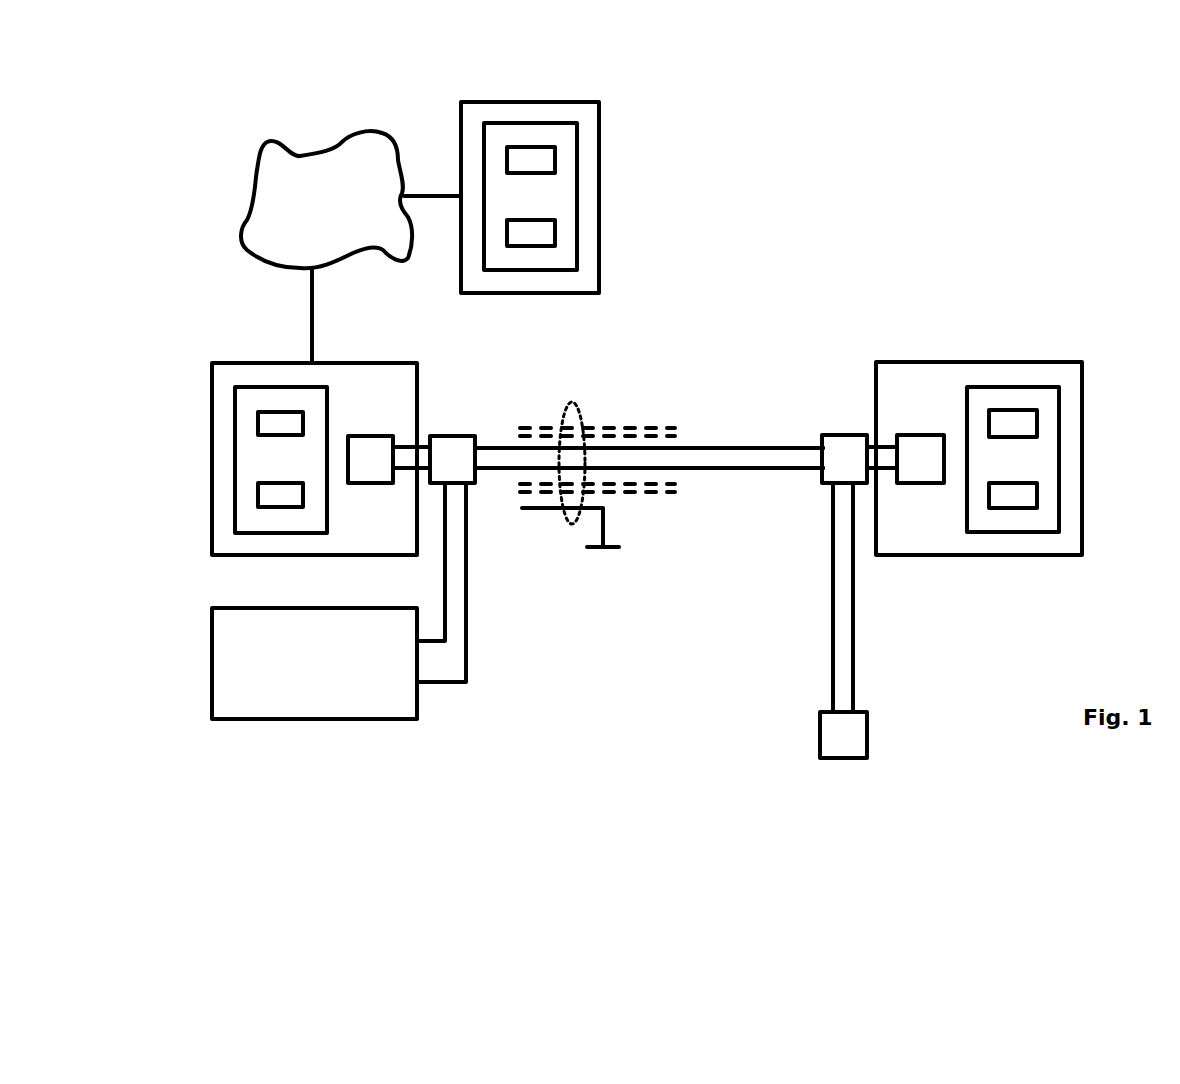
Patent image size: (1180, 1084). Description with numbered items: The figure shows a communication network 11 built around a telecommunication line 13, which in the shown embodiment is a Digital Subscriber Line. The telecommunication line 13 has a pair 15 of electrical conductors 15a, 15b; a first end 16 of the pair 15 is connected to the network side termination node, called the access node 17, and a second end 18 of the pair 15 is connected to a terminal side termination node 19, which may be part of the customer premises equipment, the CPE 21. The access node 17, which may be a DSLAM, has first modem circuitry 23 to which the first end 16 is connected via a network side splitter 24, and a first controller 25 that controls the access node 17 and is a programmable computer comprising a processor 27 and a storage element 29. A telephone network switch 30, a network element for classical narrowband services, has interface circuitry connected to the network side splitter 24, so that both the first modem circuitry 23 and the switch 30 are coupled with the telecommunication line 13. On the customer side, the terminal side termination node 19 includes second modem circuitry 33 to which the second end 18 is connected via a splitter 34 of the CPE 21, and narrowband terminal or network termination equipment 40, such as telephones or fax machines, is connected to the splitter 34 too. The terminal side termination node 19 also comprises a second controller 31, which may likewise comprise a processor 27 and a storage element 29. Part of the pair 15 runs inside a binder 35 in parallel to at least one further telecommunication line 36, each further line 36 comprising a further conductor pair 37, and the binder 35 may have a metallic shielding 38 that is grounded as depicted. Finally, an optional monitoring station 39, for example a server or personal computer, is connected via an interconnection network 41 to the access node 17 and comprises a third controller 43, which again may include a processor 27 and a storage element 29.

The communication network 11 is at (236, 124).
The telecommunication line 13 is at (694, 350).
The pair of electrical conductors 15 is at (716, 530).
The electrical conductor 15a is at (792, 448).
The electrical conductor 15b is at (806, 468).
The first end of the pair 16 is at (466, 355).
The access node 17 is at (365, 363).
The second end of the pair 18 is at (850, 375).
The terminal side termination node 19 is at (907, 362).
The customer premises equipment 21 is at (963, 252).
The first modem circuitry 23 is at (385, 483).
The network side splitter 24 is at (462, 436).
The first controller 25 is at (285, 387).
The processor 27 is at (555, 160).
The storage element 29 is at (555, 225).
The telephone network switch 30 is at (417, 703).
The second controller 31 is at (1045, 387).
The second modem circuitry 33 is at (932, 483).
The splitter 34 is at (842, 435).
The binder 35 is at (577, 402).
The further telecommunication line 36 is at (755, 405).
The further conductor pair 37 is at (688, 424).
The shielding 38 is at (598, 525).
The monitoring station 39 is at (599, 257).
The narrowband terminal or network termination equipment 40 is at (867, 745).
The interconnection network 41 is at (340, 142).
The third controller 43 is at (577, 185).